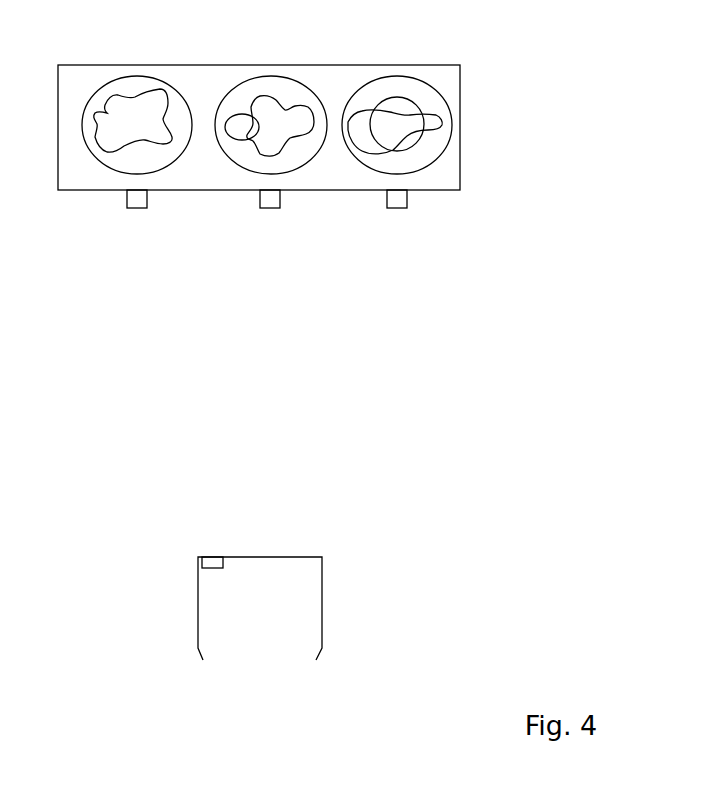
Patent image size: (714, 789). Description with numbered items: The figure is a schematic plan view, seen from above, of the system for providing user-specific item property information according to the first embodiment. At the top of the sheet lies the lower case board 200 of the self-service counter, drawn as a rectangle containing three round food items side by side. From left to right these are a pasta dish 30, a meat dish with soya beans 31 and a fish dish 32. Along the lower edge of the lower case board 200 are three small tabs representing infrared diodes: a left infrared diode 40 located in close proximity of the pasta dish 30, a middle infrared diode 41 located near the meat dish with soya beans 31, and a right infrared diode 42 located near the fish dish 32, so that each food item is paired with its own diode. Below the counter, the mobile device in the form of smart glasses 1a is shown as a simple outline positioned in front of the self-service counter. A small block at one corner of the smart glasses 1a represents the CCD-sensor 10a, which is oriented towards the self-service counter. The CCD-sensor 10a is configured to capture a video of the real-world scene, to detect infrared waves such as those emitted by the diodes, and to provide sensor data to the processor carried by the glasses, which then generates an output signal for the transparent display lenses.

The lower case board 200 is at (460, 162).
The pasta dish 30 is at (135, 117).
The meat dish with soya beans 31 is at (273, 120).
The fish dish 32 is at (383, 122).
The left infrared diode 40 is at (127, 202).
The middle infrared diode 41 is at (260, 202).
The right infrared diode 42 is at (387, 202).
The smart glasses 1a is at (357, 571).
The CCD-sensor 10a is at (207, 557).